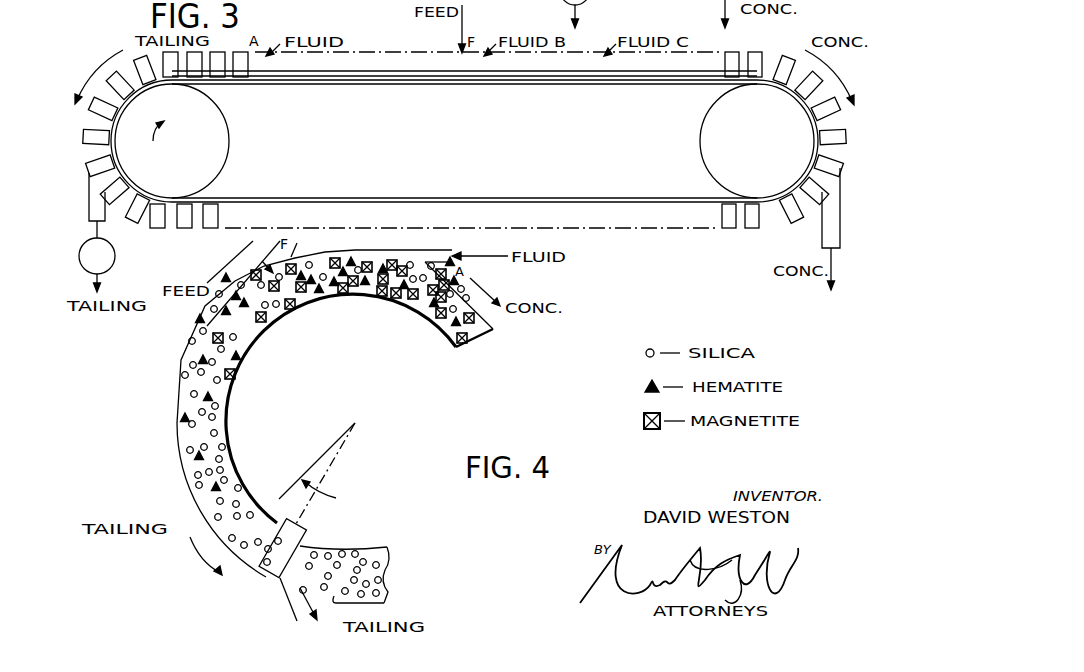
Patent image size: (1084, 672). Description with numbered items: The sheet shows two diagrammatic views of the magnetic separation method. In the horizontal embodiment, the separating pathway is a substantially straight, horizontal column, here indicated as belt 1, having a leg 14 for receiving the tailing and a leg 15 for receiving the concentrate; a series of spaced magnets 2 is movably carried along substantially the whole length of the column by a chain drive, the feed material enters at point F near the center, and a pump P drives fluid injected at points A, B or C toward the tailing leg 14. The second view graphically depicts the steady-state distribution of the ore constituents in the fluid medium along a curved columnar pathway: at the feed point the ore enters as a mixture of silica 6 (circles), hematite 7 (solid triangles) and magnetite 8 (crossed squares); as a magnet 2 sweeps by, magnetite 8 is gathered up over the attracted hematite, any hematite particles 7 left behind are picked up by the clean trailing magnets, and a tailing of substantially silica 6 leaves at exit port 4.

In FIG. 3, the belt 1 is at (354, 54).
In FIG. 3, the magnet 2 is at (183, 229).
In FIG. 4, the magnet 2 is at (268, 562).
In FIG. 4, the exit port 4 is at (286, 598).
In FIG. 4, the silica 6 is at (348, 566).
In FIG. 4, the particles of hematite 7 is at (188, 412).
In FIG. 4, the magnetite 8 is at (213, 332).
In FIG. 3, the leg 14 is at (90, 207).
In FIG. 3, the leg 15 is at (836, 222).